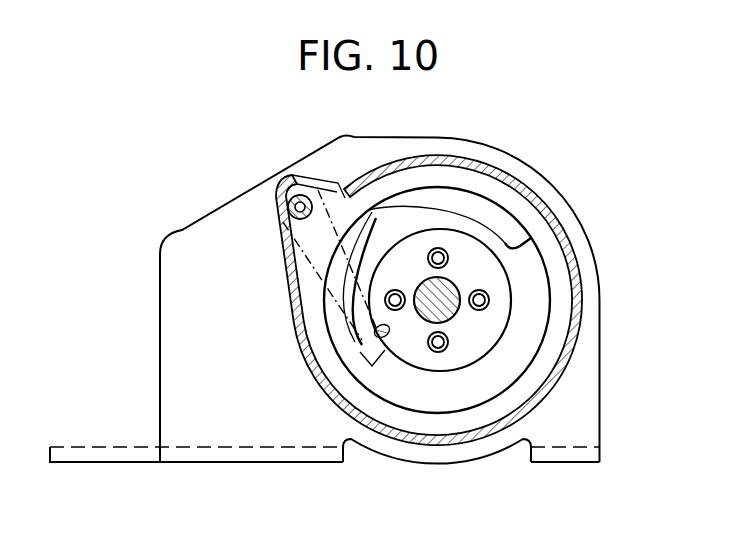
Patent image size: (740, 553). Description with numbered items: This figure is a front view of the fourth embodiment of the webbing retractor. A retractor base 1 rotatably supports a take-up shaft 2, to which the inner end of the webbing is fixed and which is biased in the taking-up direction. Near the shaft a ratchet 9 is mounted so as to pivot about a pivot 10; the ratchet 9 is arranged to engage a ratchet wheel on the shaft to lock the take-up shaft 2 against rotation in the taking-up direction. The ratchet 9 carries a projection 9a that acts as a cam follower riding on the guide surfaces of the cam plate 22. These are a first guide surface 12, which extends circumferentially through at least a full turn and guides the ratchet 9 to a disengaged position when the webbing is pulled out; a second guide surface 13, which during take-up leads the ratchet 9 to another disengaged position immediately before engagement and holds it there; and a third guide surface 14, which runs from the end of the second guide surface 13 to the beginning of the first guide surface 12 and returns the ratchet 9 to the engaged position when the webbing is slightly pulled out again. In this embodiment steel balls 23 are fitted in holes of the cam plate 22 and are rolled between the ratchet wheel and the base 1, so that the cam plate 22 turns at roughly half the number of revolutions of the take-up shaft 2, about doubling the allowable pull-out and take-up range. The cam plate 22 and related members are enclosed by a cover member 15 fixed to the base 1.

The retractor base 1 is at (189, 248).
The take-up shaft 2 is at (449, 290).
The ratchet 9 is at (313, 262).
The projection 9a is at (375, 333).
The pivot 10 is at (300, 206).
The first guide surface 12 is at (509, 272).
The second guide surface 13 is at (368, 208).
The third guide surface 14 is at (382, 357).
The cover member 15 is at (538, 192).
The cam plate 22 is at (540, 291).
The steel balls 23 is at (428, 262).